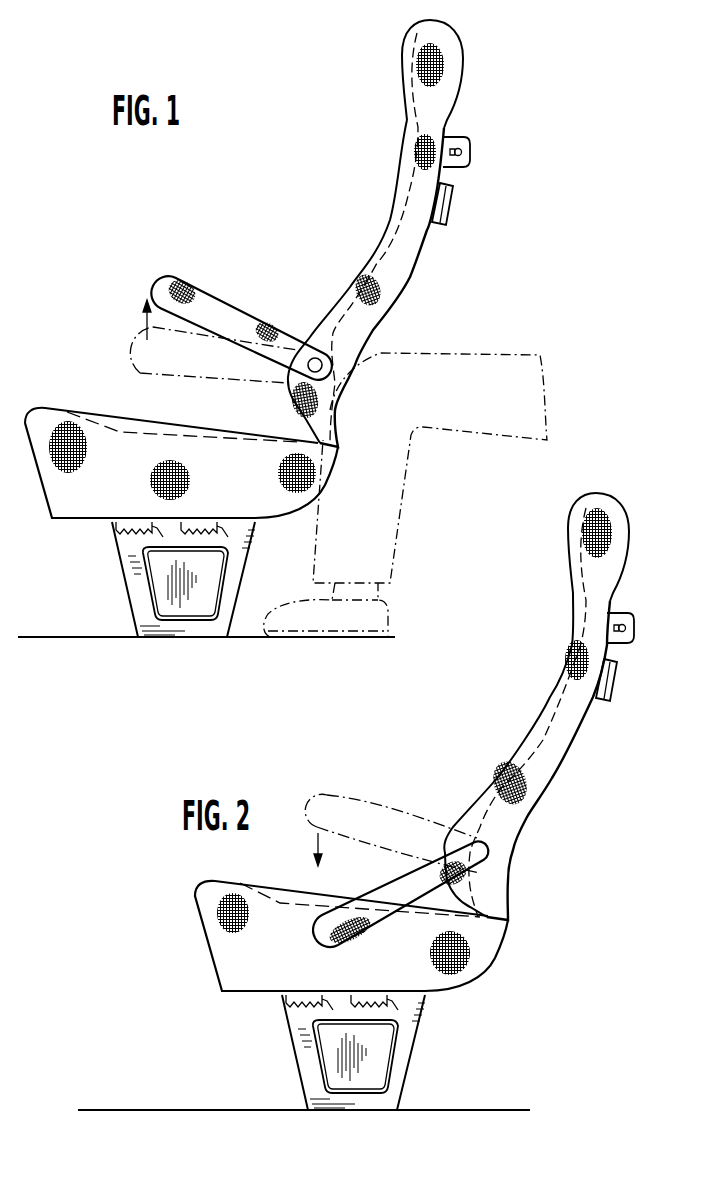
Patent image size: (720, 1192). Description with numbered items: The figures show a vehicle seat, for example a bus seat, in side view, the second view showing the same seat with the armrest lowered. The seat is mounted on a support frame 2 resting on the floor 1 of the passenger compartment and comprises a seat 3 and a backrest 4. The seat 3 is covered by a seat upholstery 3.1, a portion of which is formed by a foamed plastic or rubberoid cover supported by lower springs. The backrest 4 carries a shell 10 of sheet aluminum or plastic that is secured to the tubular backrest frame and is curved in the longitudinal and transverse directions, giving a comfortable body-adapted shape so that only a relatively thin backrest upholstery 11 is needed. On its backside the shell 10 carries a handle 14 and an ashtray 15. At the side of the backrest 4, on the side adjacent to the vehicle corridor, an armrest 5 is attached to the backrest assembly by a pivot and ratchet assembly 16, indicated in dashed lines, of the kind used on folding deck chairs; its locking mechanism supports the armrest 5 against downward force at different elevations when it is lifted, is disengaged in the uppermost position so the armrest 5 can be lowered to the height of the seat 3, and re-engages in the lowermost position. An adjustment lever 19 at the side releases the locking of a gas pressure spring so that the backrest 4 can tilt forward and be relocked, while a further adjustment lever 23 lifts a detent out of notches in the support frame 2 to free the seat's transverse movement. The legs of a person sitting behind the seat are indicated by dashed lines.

In FIG. 1, the floor 1 is at (36, 637).
In FIG. 1, the support frame 2 is at (230, 588).
In FIG. 1, the seat 3 is at (52, 472).
In FIG. 2, the seat 3 is at (218, 933).
In FIG. 1, the seat upholstery 3.1 is at (40, 410).
In FIG. 1, the backrest 4 is at (390, 265).
In FIG. 2, the backrest 4 is at (503, 810).
In FIG. 1, the armrest 5 is at (176, 268).
In FIG. 2, the armrest 5 is at (333, 912).
In FIG. 1, the shell 10 is at (378, 312).
In FIG. 2, the shell 10 is at (555, 763).
In FIG. 1, the backrest upholstery 11 is at (382, 244).
In FIG. 2, the backrest upholstery 11 is at (525, 752).
In FIG. 1, the handle 14 is at (470, 152).
In FIG. 1, the ashtray 15 is at (447, 208).
In FIG. 1, the pivot and ratchet assembly 16 is at (350, 358).
In FIG. 1, the adjustment lever 19 is at (115, 527).
In FIG. 1, the adjustment lever 23 is at (215, 527).